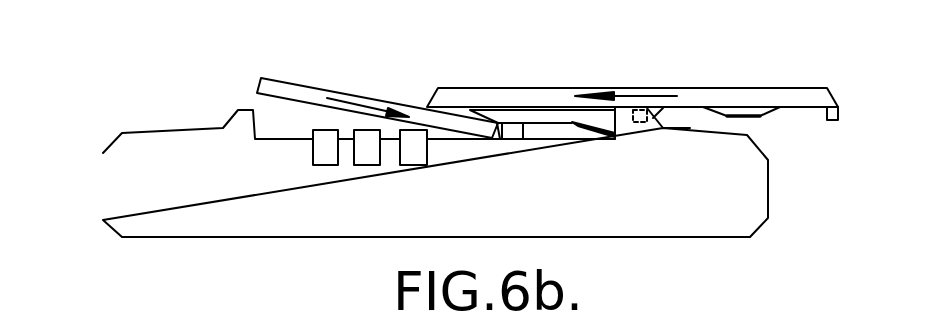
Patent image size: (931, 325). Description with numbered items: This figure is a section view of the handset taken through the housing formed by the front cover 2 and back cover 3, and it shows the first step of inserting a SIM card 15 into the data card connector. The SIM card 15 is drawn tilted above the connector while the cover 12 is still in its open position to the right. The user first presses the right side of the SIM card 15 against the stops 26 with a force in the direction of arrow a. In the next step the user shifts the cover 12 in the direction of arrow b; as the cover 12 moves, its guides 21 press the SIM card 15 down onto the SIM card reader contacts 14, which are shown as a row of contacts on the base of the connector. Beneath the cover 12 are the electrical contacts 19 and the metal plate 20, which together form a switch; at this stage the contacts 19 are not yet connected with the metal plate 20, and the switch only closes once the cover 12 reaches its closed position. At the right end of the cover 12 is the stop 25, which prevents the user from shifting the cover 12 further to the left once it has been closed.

The front cover 2 is at (411, 158).
The back cover 3 is at (112, 142).
The cover 12 is at (687, 88).
The SIM card reader contacts 14 is at (325, 165).
The SIM card 15 is at (310, 85).
The electrical contacts 19 is at (583, 130).
The metal plate 20 is at (752, 118).
The guides 21 is at (543, 115).
The stop 25 is at (837, 121).
The stops 26 is at (513, 141).